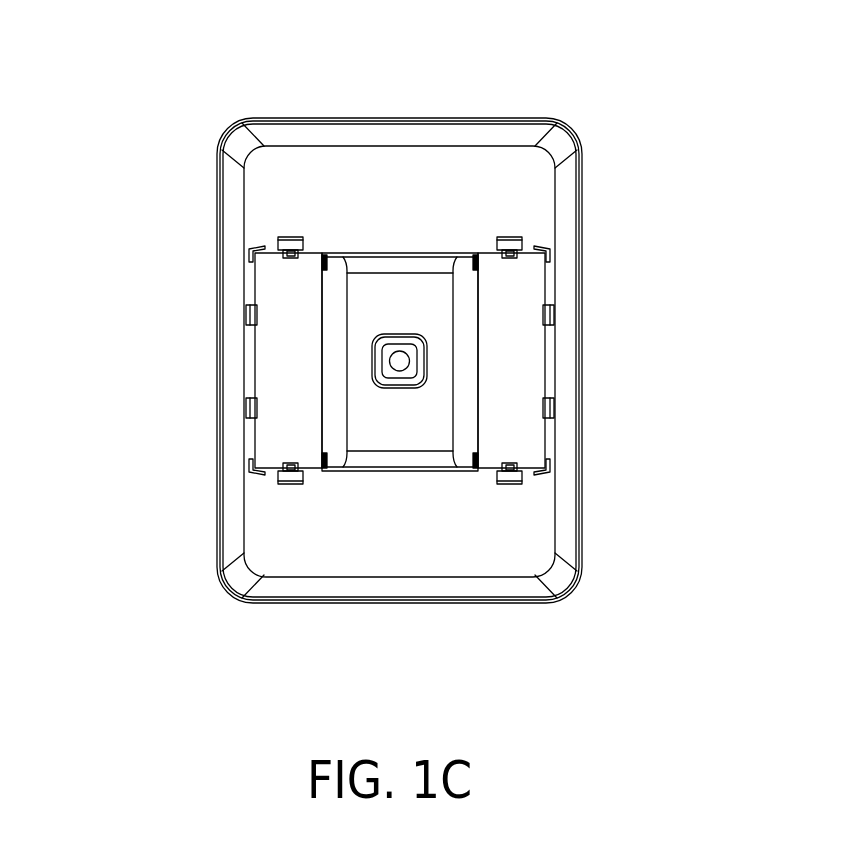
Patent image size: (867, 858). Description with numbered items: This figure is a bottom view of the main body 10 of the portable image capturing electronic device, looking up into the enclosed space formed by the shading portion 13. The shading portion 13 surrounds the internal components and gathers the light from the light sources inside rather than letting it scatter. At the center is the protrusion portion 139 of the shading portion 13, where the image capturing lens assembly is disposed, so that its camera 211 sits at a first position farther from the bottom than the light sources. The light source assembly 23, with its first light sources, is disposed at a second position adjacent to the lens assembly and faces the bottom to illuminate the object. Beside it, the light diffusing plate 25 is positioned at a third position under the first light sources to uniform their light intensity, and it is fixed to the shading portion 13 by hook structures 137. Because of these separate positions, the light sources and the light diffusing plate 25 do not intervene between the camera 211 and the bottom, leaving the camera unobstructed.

The main body 10 is at (150, 111).
The shading portion 13 is at (216, 193).
The light source assembly 23 is at (337, 278).
The light diffusing plate 25 is at (300, 450).
The hook structure 137 is at (513, 483).
The protrusion portion 139 is at (390, 296).
The camera 211 is at (413, 358).